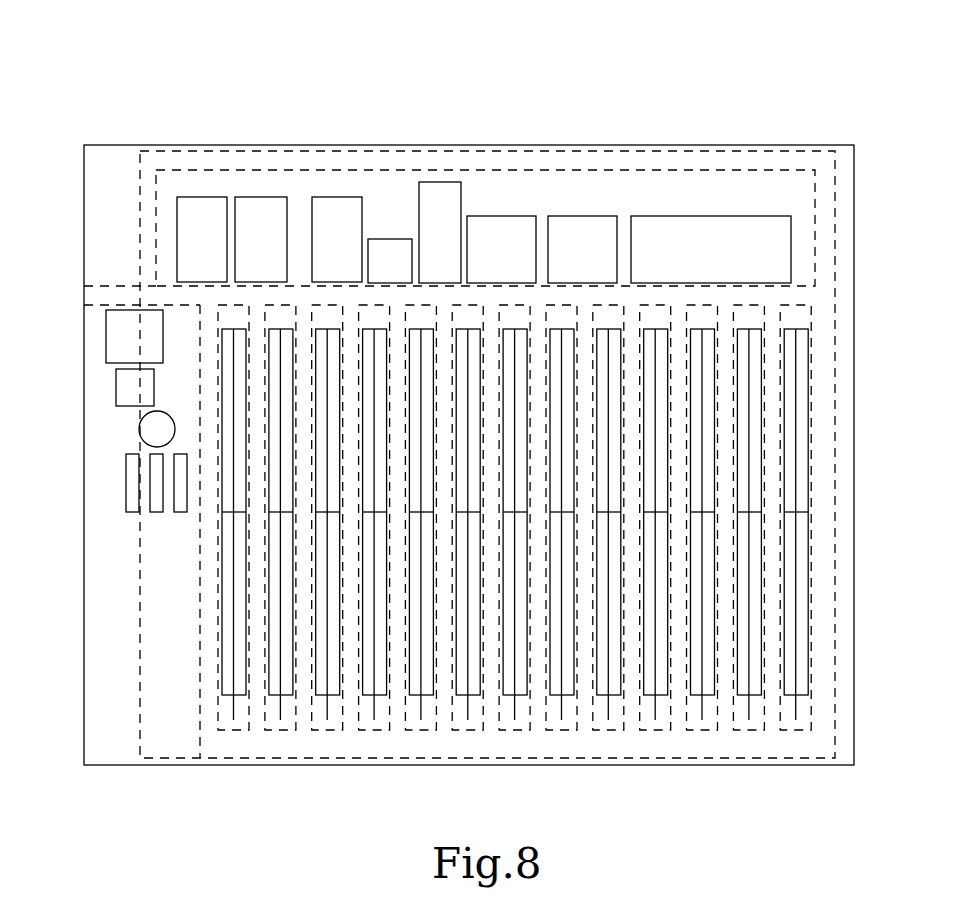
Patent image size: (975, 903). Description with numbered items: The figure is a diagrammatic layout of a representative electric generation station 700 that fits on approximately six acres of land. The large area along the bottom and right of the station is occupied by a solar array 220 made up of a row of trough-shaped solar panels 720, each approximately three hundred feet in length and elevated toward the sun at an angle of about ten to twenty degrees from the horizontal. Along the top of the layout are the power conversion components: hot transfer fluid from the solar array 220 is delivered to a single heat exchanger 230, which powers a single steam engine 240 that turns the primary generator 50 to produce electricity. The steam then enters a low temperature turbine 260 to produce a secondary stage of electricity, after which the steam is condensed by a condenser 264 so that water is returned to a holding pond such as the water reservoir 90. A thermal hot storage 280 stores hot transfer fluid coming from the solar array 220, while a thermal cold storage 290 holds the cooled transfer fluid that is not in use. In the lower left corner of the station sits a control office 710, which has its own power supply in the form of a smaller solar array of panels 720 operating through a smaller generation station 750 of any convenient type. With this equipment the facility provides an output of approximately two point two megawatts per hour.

The electric generation station 700 is at (672, 96).
The heat exchanger 230 is at (449, 200).
The condenser 264 is at (222, 254).
The low temperature turbine 260 is at (281, 254).
The primary generator 50 is at (351, 254).
The steam engine 240 is at (410, 274).
The water reservoir 90 is at (515, 254).
The thermal cold storage 290 is at (602, 254).
The thermal hot storage 280 is at (720, 254).
The solar array 220 is at (168, 618).
The control office 710 is at (131, 387).
The smaller generation station 750 is at (158, 428).
The trough-shaped solar panel 720 is at (153, 530).